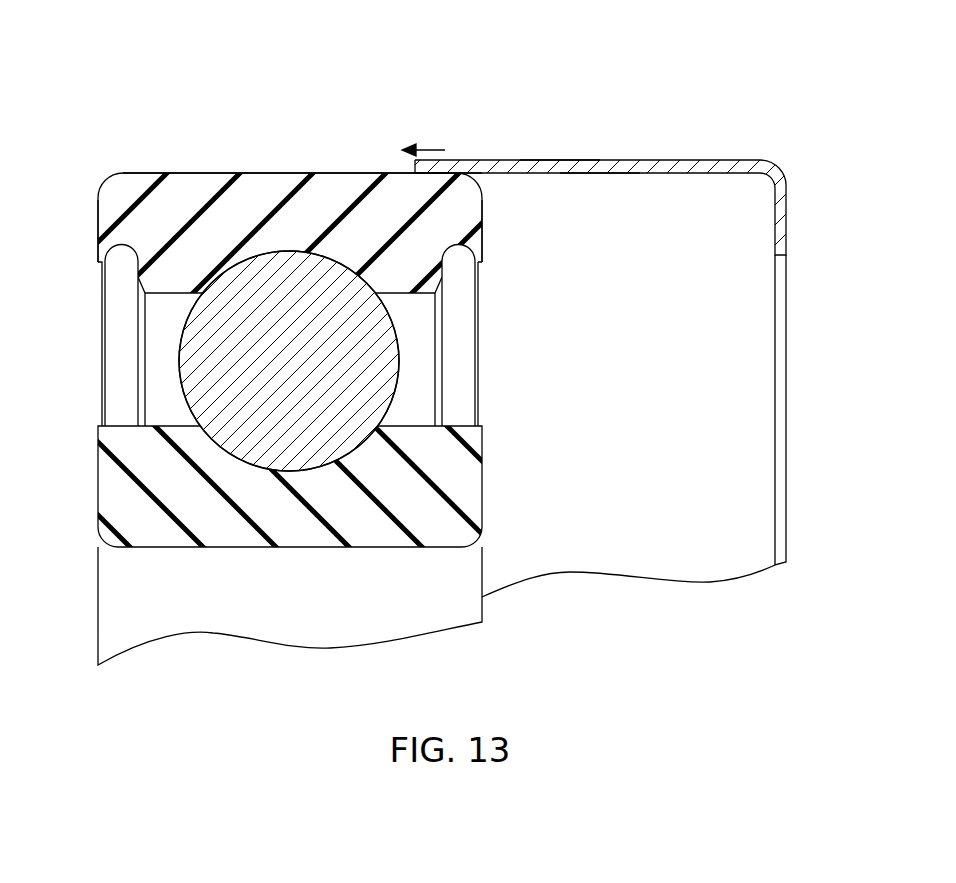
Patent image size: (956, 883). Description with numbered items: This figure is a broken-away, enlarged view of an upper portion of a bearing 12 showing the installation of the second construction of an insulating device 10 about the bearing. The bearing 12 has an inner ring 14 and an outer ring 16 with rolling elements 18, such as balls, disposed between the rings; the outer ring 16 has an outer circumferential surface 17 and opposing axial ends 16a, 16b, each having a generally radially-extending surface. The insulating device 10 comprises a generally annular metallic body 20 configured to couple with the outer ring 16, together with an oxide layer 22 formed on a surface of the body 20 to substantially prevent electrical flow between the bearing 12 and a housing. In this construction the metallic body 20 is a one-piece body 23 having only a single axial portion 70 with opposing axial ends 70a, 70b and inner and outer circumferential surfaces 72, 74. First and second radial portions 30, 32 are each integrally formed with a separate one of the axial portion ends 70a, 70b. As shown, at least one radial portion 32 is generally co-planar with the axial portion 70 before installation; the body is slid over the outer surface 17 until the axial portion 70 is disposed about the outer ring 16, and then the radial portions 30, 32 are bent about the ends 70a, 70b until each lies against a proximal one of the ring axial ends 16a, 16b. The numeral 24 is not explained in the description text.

The insulating device 10 is at (500, 76).
The bearing 12 is at (520, 551).
The inner ring 14 is at (496, 469).
The outer ring 16 is at (277, 257).
The axial end of outer ring 16a is at (482, 245).
The axial end of outer ring 16b is at (98, 227).
The outer circumferential surface 17 is at (213, 172).
The rolling elements 18 is at (385, 352).
The metallic body 20 is at (580, 162).
The oxide layer 22 is at (600, 188).
The one-piece body 23 is at (580, 162).
The outer surface of retention device 24 is at (551, 148).
The first radial portion 30 is at (798, 213).
The second radial portion 32 is at (455, 148).
The axial portion 70 is at (580, 169).
The axial portion end 70a is at (773, 172).
The axial portion end 70b is at (478, 172).
The inner circumferential surface 72 is at (666, 174).
The outer circumferential surface 74 is at (740, 160).